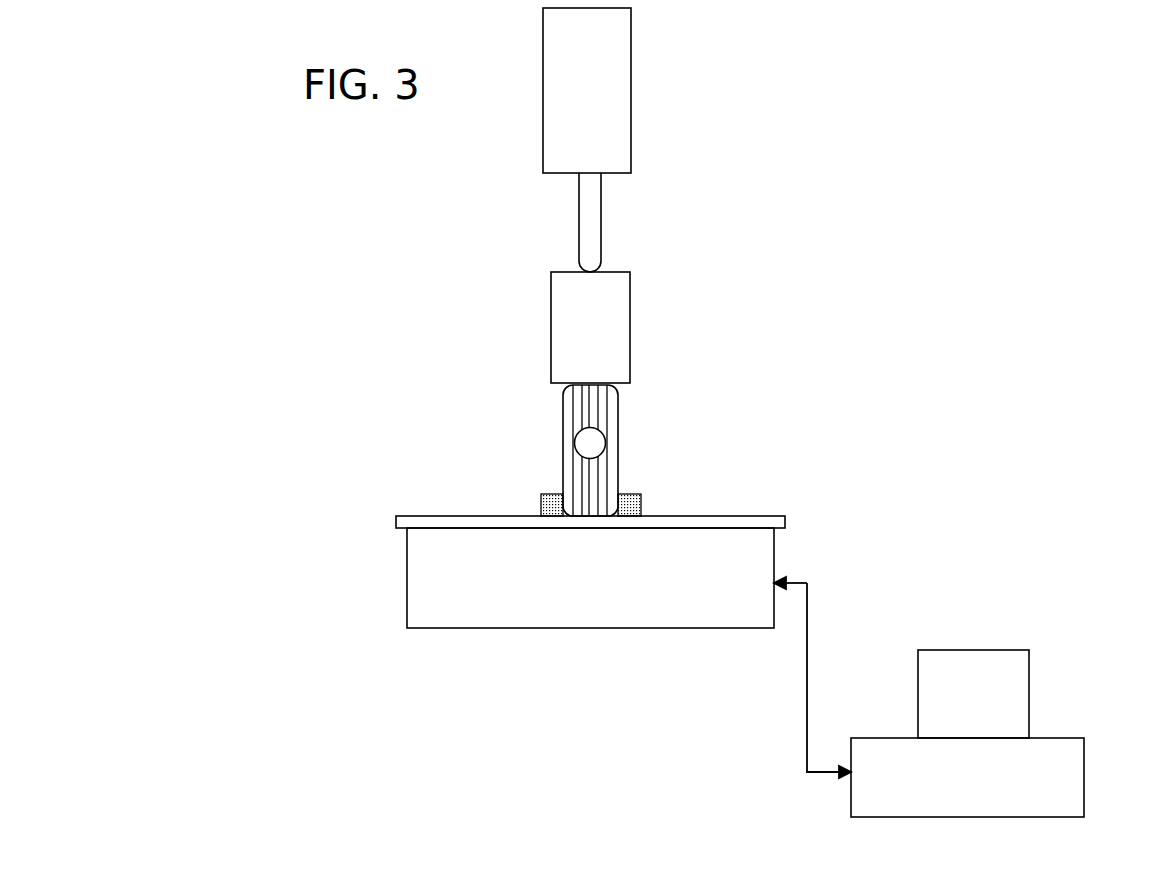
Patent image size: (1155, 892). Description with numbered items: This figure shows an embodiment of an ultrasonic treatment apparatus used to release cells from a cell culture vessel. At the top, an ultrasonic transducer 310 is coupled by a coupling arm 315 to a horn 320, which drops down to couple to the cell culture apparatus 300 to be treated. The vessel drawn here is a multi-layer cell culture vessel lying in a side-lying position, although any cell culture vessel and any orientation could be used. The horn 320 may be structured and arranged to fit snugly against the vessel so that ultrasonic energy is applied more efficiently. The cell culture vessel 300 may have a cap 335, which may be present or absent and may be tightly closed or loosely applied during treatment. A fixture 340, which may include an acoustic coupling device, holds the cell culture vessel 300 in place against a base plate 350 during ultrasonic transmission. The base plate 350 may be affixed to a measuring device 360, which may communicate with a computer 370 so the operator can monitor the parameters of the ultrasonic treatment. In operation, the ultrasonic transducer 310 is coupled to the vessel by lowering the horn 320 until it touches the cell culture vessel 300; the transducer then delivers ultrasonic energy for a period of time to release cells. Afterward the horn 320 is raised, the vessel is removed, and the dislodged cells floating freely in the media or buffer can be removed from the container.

The cell culture apparatus 300 is at (619, 448).
The ultrasonic transducer 310 is at (632, 97).
The coupling arm 315 is at (602, 229).
The horn 320 is at (548, 322).
The cap 335 is at (590, 443).
The fixture 340 is at (538, 509).
The base plate 350 is at (782, 521).
The measuring device 360 is at (407, 563).
The computer 370 is at (963, 649).